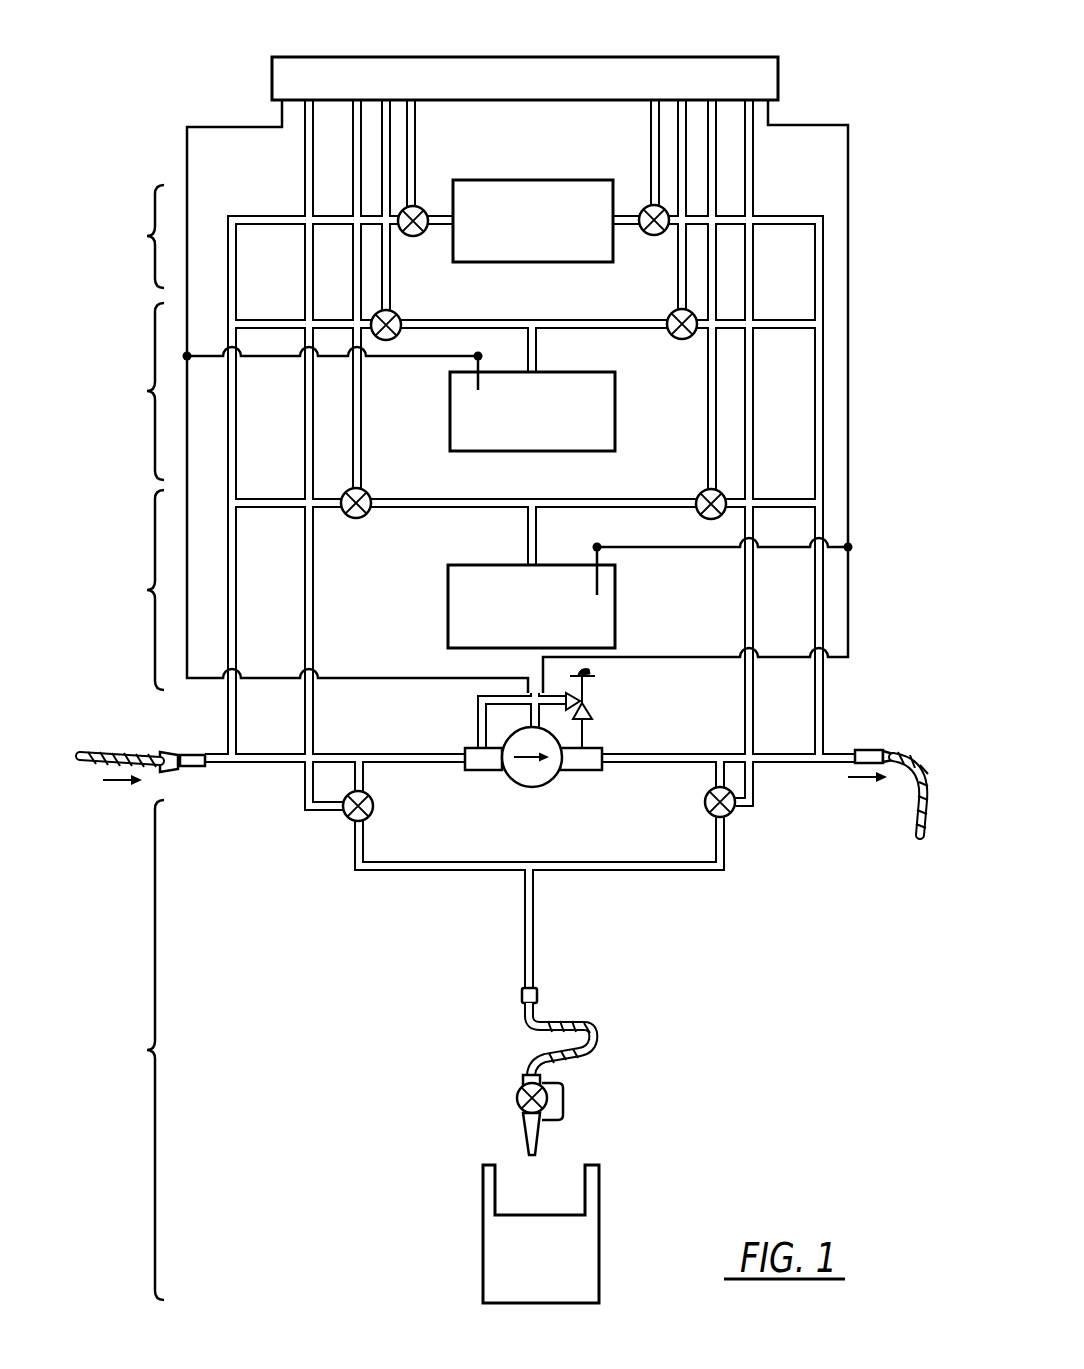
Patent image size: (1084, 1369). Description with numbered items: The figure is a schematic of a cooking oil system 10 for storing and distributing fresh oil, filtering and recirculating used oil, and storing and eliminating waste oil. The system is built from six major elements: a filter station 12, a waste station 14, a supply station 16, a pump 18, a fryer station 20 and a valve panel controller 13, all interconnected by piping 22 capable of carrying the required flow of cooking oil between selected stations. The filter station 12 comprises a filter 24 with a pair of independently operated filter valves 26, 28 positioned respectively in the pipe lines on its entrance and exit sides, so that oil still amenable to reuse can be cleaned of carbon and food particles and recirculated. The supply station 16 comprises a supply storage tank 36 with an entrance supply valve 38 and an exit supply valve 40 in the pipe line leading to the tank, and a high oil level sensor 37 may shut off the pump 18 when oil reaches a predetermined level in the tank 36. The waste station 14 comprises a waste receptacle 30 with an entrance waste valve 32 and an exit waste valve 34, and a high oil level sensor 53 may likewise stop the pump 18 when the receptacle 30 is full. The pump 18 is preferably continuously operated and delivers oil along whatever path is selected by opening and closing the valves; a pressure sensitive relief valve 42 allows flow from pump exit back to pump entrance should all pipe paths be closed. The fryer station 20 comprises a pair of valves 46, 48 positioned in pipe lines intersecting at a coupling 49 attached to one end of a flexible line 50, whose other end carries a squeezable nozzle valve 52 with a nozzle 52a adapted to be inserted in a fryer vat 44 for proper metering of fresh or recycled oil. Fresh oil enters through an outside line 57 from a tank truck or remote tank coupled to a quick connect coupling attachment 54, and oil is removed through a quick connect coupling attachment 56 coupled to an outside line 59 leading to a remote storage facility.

The system 10 is at (252, 62).
The valve panel controller 13 is at (776, 57).
The filter station 12 is at (136, 236).
The supply station 16 is at (134, 391).
The waste station 14 is at (134, 590).
The fryer station 20 is at (130, 1050).
The filter 24 is at (510, 180).
The filter valve 28 is at (405, 238).
The filter valve 26 is at (648, 237).
The exit supply valve 40 is at (403, 321).
The entrance supply valve 38 is at (668, 313).
The high oil level sensor 37 is at (482, 366).
The supply storage tank 36 is at (617, 416).
The piping 22 is at (242, 480).
The exit waste valve 34 is at (371, 498).
The entrance waste valve 32 is at (699, 491).
The waste receptacle 30 is at (448, 574).
The high oil level sensor 53 is at (603, 582).
The outside line 57 is at (126, 712).
The quick connect coupling attachment 54 is at (196, 731).
The pressure sensitive relief valve 42 is at (590, 737).
The pump 18 is at (553, 778).
The fryer valve 48 is at (374, 810).
The fryer valve 46 is at (733, 812).
The quick connect coupling attachment 56 is at (860, 750).
The outside line 59 is at (920, 817).
The coupling 49 is at (520, 996).
The flexible line 50 is at (594, 1036).
The squeezable nozzle valve 52 is at (518, 1096).
The nozzle 52a is at (524, 1138).
The fryer vat 44 is at (600, 1190).